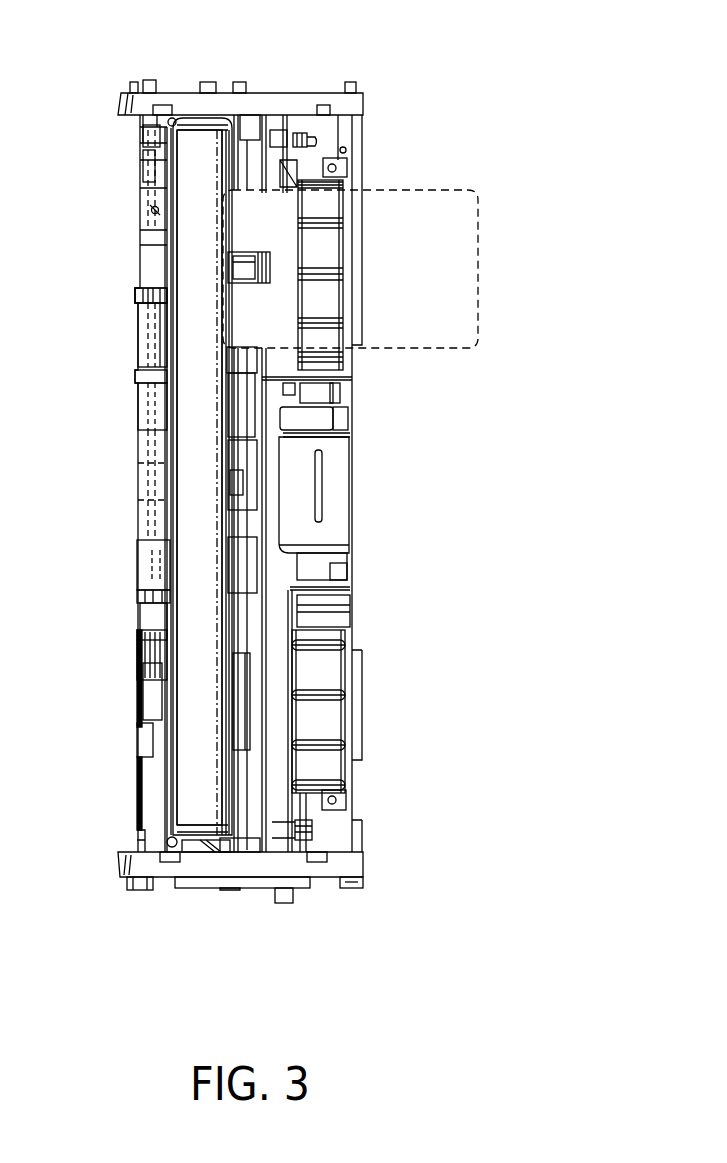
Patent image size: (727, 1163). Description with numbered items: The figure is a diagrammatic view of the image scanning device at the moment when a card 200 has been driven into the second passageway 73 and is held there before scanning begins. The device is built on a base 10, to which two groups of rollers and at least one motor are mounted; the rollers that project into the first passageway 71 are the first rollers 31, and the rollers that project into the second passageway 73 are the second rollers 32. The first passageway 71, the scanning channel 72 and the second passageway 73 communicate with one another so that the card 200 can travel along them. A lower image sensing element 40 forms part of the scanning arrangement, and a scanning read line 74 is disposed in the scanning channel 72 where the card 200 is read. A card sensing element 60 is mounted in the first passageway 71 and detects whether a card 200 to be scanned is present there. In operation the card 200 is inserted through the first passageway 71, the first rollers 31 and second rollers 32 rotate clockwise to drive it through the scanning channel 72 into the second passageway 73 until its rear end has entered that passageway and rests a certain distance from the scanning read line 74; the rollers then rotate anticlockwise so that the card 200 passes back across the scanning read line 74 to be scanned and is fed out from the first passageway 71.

The base 10 is at (350, 572).
The first rollers 31 is at (138, 296).
The second rollers 32 is at (232, 262).
The lower image sensing element 40 is at (192, 352).
The card sensing element 60 is at (155, 210).
The first passageway 71 is at (163, 160).
The scanning channel 72 is at (200, 170).
The second passageway 73 is at (287, 172).
The scanning read line 74 is at (213, 402).
The card 200 is at (467, 232).